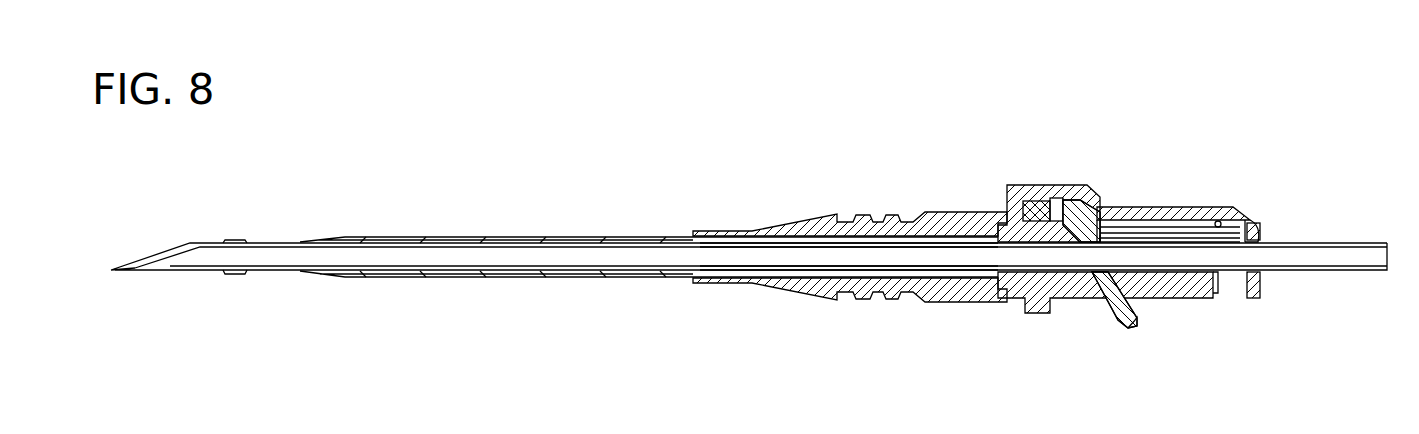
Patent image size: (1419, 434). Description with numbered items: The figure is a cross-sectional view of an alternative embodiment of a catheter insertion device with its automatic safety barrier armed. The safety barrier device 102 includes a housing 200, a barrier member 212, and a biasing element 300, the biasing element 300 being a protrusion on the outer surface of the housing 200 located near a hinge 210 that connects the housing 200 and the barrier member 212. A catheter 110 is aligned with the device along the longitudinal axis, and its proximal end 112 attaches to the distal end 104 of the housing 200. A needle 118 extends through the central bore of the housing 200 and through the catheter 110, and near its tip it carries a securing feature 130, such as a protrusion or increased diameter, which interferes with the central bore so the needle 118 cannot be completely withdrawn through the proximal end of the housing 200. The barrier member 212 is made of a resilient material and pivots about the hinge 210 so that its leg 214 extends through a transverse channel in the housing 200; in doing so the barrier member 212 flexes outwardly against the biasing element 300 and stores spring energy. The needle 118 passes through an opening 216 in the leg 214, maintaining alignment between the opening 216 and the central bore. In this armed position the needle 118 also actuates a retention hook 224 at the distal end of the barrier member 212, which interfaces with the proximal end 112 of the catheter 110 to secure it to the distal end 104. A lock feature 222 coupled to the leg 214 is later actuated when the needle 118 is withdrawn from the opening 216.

The safety barrier device 102 is at (1085, 192).
The distal end 104 is at (997, 232).
The catheter 110 is at (760, 230).
The proximal end 112 is at (1043, 200).
The needle 118 is at (200, 243).
The securing feature 130 is at (232, 274).
The housing 200 is at (1200, 300).
The hinge 210 is at (1250, 216).
The barrier member 212 is at (1182, 207).
The leg 214 is at (1103, 305).
The opening 216 is at (1090, 242).
The lock feature 222 is at (1135, 320).
The retention hook 224 is at (1018, 185).
The biasing element 300 is at (1217, 221).